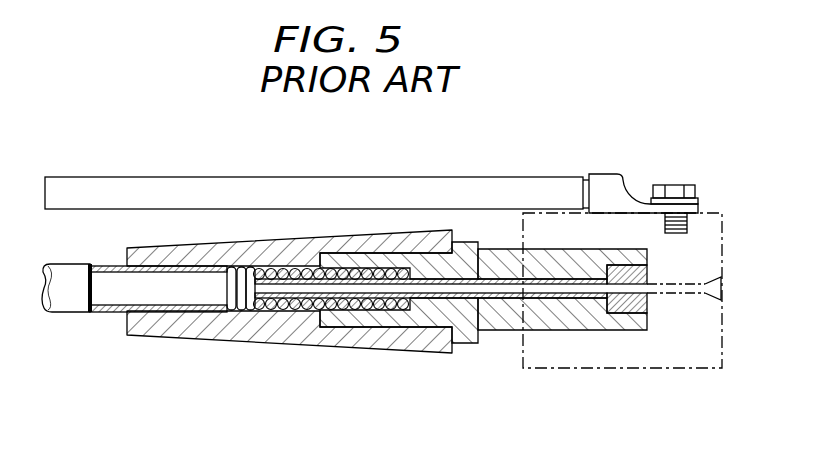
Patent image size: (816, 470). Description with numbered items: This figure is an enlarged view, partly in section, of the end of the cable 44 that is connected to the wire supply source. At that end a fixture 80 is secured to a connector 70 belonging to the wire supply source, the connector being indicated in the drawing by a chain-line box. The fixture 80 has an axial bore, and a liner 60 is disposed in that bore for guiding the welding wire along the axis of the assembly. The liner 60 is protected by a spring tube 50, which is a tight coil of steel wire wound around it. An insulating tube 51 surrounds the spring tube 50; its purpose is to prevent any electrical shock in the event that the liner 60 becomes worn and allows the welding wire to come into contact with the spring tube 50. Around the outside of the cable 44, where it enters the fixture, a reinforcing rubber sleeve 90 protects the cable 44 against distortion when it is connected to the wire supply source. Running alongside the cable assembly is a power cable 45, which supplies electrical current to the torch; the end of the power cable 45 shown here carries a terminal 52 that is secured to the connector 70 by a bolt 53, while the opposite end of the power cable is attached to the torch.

The cable 44 is at (368, 347).
The power cable 45 is at (502, 176).
The spring tube 50 is at (230, 303).
The insulating tube 51 is at (70, 300).
The terminal 52 is at (604, 173).
The bolt 53 is at (675, 185).
The liner 60 is at (648, 303).
The connector 70 is at (575, 368).
The fixture 80 is at (467, 343).
The reinforcing rubber sleeve 90 is at (292, 343).